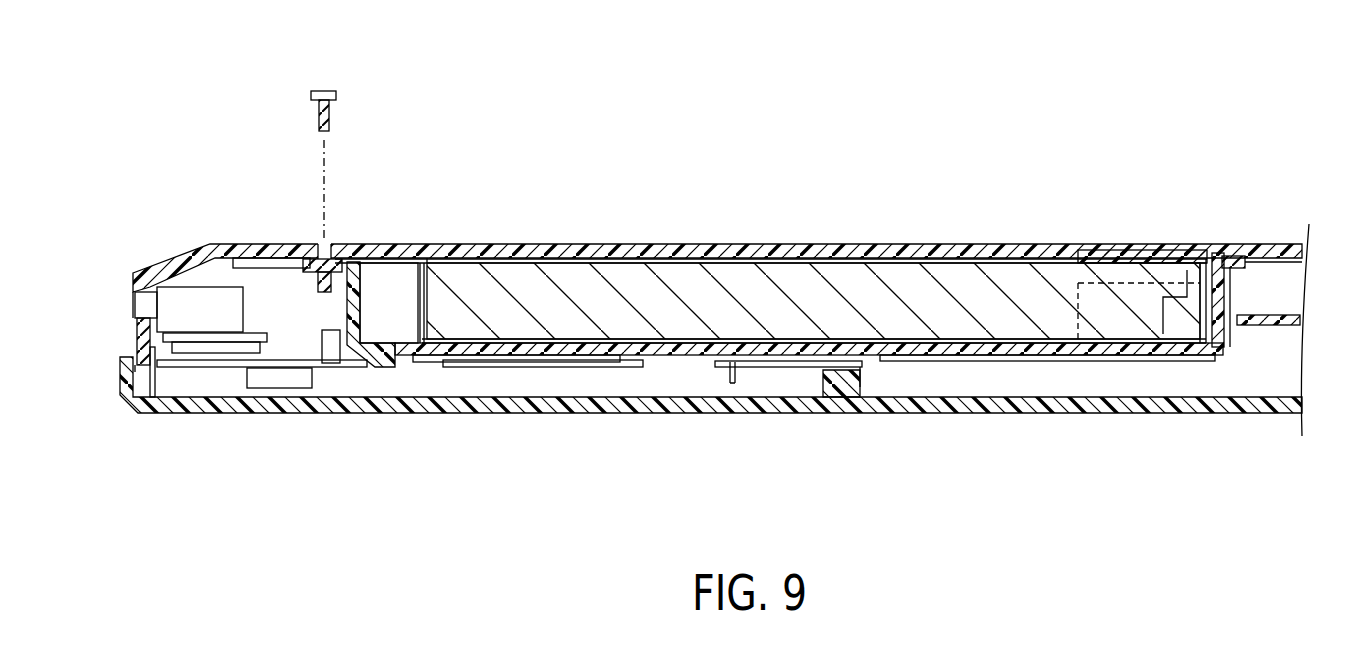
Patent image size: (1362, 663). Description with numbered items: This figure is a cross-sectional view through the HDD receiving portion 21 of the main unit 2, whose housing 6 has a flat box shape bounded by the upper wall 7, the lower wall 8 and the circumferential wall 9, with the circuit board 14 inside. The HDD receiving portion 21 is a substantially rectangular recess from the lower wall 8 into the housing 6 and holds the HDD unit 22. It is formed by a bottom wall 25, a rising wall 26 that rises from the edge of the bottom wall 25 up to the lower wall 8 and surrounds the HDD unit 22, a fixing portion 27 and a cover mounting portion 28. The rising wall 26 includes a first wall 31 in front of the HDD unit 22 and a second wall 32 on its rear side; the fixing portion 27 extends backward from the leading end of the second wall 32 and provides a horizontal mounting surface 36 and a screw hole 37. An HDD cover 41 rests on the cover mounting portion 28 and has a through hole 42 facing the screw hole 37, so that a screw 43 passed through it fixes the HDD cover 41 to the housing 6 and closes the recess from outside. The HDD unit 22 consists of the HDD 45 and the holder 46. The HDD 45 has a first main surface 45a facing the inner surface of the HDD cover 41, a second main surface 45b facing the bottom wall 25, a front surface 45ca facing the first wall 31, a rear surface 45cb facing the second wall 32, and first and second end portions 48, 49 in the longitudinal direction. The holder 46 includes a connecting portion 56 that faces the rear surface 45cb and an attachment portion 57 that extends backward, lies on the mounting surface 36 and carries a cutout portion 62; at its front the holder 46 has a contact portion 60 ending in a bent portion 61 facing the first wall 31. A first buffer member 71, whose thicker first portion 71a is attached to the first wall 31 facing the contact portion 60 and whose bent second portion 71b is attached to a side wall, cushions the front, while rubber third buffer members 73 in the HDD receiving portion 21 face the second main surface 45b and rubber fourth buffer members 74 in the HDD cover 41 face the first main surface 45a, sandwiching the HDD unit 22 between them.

The main unit 2 is at (988, 70).
The housing 6 is at (1041, 418).
The upper wall 7 is at (701, 412).
The lower wall 8 is at (1255, 244).
The circumferential wall 9 is at (140, 345).
The circuit board 14 is at (1292, 323).
The HDD receiving portion 21 is at (916, 356).
The HDD unit 22 is at (786, 280).
The bottom wall 25 is at (796, 368).
The rising wall 26 is at (1236, 338).
The fixing portion 27 is at (281, 268).
The cover mounting portion 28 is at (1223, 246).
The first wall 31 is at (1226, 271).
The second wall 32 is at (351, 332).
The mounting surface 36 is at (246, 290).
The screw hole 37 is at (311, 280).
The HDD cover 41 is at (937, 252).
The through hole 42 is at (301, 245).
The screw 43 is at (322, 89).
The HDD 45 is at (690, 280).
The first main surface 45a is at (870, 263).
The second main surface 45b is at (853, 345).
The front surface 45ca is at (1163, 262).
The rear surface 45cb is at (426, 263).
The holder 46 is at (435, 252).
The first end portion 48 is at (1120, 275).
The second end portion 49 is at (471, 332).
The connecting portion 56 is at (416, 312).
The attachment portion 57 is at (393, 245).
The contact portion 60 is at (1197, 324).
The bent portion 61 is at (1207, 345).
The cutout portion 62 is at (346, 259).
The first buffer member 71 is at (1230, 301).
The first portion 71a is at (1226, 325).
The second portion 71b is at (1078, 246).
The third buffer member 73 is at (589, 364).
The fourth buffer member 74 is at (580, 259).